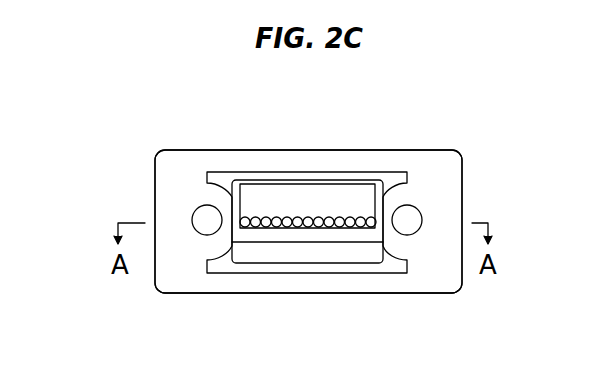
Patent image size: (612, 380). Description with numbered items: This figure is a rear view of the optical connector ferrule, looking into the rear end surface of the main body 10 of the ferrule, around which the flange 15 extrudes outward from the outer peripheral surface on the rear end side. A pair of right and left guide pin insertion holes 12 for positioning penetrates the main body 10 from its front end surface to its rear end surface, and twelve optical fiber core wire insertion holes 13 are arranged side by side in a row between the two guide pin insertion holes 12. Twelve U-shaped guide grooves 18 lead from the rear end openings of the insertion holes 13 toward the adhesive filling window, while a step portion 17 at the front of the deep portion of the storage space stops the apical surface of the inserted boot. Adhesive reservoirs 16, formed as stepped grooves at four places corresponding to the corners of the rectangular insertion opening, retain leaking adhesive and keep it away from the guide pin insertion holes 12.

The main body of the ferrule 10 is at (146, 149).
The guide pin insertion hole 12 is at (203, 205).
The optical fiber core wire insertion hole 13 is at (292, 229).
The flange 15 is at (155, 188).
The adhesive reservoir 16 is at (222, 182).
The step portion 17 is at (330, 250).
The U-shaped guide groove 18 is at (267, 218).